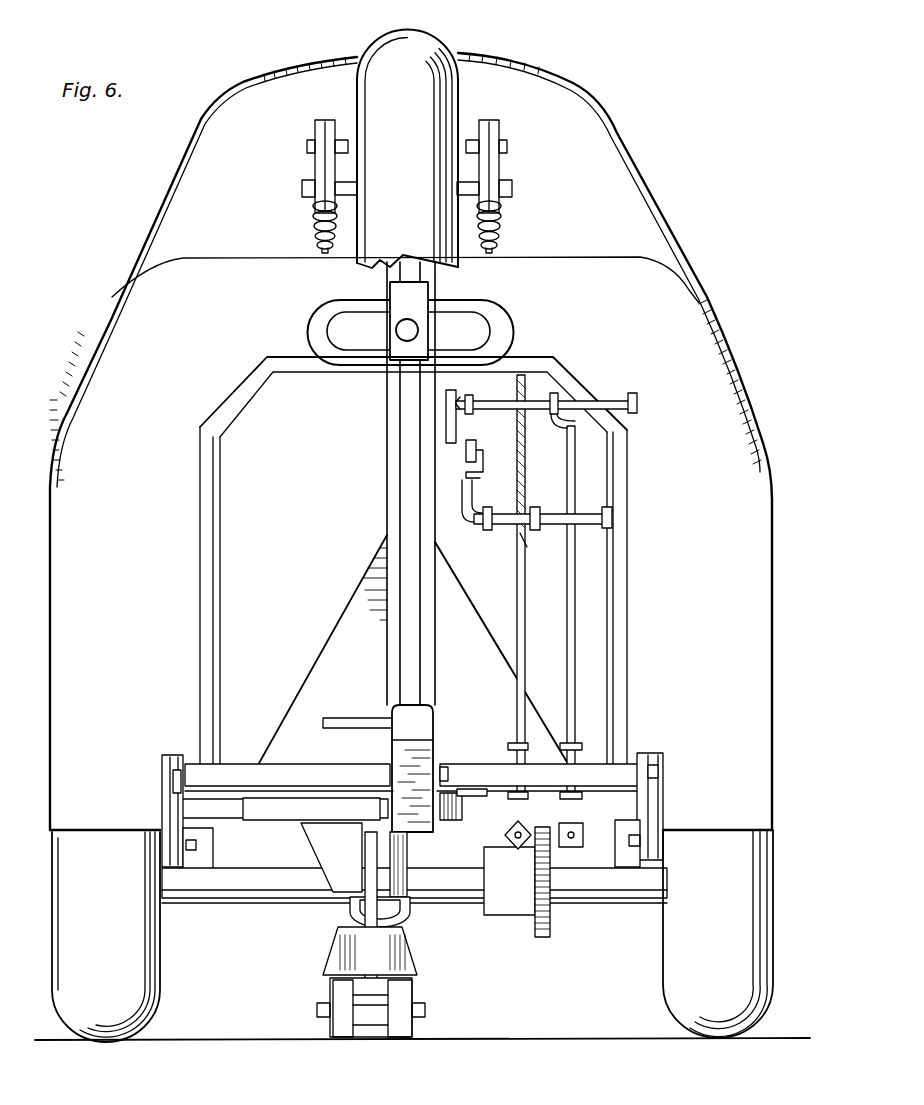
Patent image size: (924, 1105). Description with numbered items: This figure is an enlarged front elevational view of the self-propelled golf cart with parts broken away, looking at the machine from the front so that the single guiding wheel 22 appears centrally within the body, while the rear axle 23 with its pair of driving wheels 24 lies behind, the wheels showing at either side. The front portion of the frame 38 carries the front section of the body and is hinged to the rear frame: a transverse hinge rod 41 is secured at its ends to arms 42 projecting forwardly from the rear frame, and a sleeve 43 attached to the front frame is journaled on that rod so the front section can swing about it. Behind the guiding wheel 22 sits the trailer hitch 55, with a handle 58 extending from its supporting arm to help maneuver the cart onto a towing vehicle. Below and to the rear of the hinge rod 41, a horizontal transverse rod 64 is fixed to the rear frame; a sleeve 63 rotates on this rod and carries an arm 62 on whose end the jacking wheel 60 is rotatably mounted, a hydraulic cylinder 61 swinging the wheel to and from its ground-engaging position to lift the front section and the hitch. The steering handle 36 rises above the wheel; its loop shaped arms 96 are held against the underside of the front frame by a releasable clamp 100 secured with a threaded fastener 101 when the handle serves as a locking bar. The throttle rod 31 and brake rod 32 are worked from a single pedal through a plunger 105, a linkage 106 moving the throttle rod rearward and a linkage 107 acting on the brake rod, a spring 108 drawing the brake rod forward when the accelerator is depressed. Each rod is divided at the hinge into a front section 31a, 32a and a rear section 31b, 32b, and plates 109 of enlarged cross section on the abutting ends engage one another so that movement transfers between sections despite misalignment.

The guiding wheel 22 is at (430, 75).
The axle 23 is at (268, 898).
The driving wheels 24 is at (88, 1005).
The throttle rod 31 is at (563, 619).
The front section of throttle rod 31a is at (568, 685).
The rear section of throttle rod 31b is at (572, 848).
The brake rod 32 is at (509, 638).
The front section of brake rod 32a is at (516, 698).
The rear section of brake rod 32b is at (505, 840).
The steering handle 36 is at (395, 436).
The front portion of frame 38 is at (207, 560).
The hinge rod 41 is at (172, 778).
The arms 42 is at (183, 760).
The sleeve 43 is at (245, 765).
The trailer hitch 55 is at (395, 712).
The handle 58 is at (333, 718).
The jacking wheel 60 is at (415, 1030).
The hydraulic cylinder 61 is at (397, 880).
The arm 62 is at (360, 865).
The sleeve 63 is at (265, 818).
The rod 64 is at (230, 820).
The loop shaped arms 96 is at (505, 335).
The releasable clamp 100 is at (430, 295).
The threaded fastener 101 is at (418, 330).
The plunger 105 is at (465, 458).
The linkage 106 is at (499, 410).
The linkage 107 is at (502, 530).
The spring 108 is at (522, 490).
The plates 109 is at (508, 828).